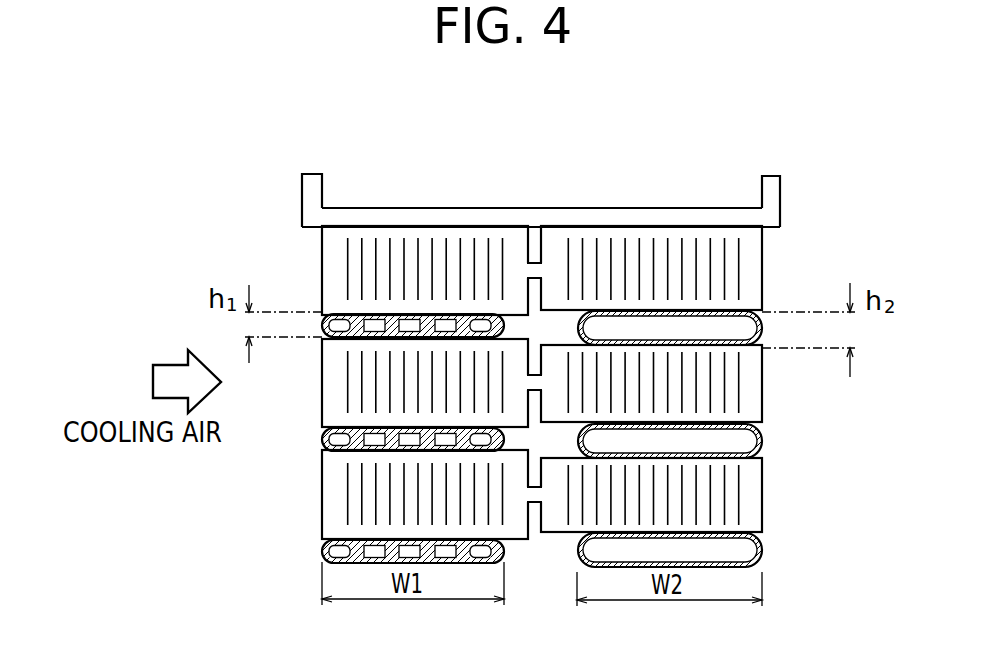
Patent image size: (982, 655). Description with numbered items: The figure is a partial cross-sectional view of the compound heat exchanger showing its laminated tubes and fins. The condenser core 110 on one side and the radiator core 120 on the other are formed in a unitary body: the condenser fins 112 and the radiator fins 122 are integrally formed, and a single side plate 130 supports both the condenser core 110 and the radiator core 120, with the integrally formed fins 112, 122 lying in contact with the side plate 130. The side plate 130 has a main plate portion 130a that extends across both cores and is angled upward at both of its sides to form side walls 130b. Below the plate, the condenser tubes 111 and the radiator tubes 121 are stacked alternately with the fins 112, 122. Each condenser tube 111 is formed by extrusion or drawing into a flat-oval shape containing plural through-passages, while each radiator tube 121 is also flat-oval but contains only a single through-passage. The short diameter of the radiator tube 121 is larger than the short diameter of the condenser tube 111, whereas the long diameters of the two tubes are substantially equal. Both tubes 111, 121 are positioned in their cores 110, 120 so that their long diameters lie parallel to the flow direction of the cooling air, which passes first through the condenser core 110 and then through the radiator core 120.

The condenser core 110 is at (392, 343).
The condenser tube 111 is at (397, 314).
The condenser fins 112 is at (322, 258).
The radiator core 120 is at (685, 337).
The radiator tube 121 is at (670, 311).
The radiator fins 122 is at (762, 258).
The side plate 130 is at (537, 167).
The plate portion of side plate 130a is at (713, 208).
The side walls 130b is at (303, 200).